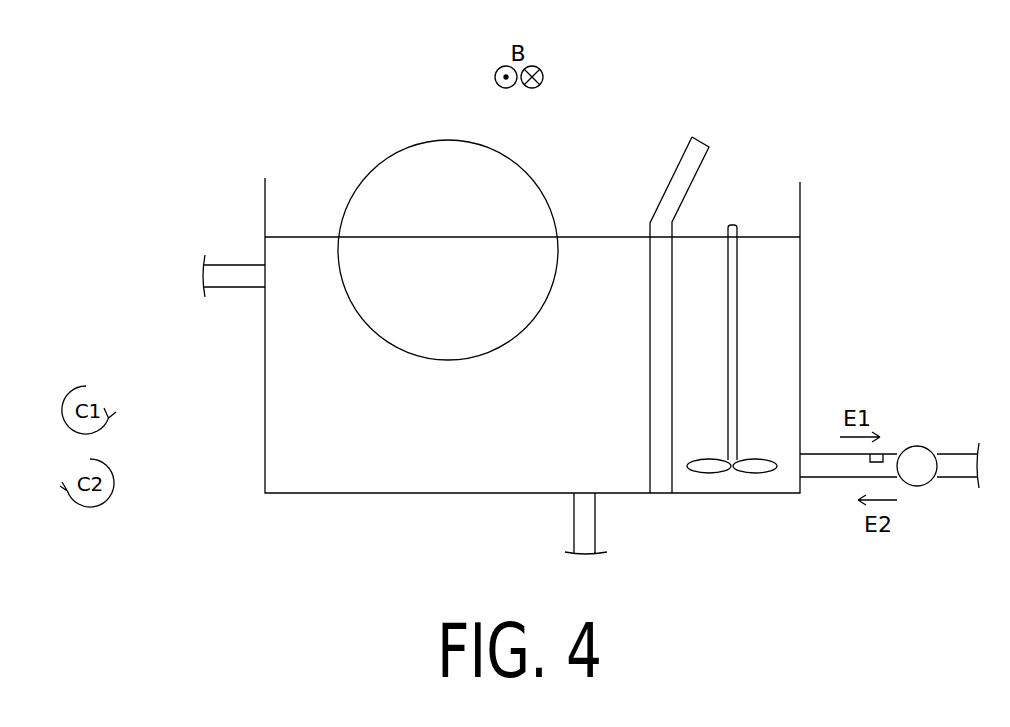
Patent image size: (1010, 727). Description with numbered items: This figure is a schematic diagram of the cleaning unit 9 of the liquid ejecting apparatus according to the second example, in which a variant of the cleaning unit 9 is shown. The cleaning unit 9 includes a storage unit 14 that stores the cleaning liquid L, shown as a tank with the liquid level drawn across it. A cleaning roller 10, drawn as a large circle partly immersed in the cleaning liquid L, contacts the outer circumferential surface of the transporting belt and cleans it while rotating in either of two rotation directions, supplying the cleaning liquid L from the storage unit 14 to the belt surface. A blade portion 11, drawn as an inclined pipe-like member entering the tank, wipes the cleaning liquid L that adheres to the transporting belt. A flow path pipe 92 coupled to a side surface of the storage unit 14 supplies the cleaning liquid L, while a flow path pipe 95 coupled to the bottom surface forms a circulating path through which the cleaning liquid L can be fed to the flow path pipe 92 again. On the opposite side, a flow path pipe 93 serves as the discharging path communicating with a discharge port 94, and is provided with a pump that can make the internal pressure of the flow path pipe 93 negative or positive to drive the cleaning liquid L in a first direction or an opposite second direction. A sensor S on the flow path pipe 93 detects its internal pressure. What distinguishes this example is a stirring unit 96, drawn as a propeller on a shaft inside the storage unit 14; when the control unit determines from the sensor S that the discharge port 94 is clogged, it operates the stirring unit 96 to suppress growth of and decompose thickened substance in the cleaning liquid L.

The cleaning unit 9 is at (840, 104).
The cleaning roller 10 is at (407, 148).
The blade portion 11 is at (702, 137).
The storage unit 14 is at (800, 203).
The flow path pipe 92 is at (230, 265).
The flow path pipe 93 is at (822, 477).
The discharge port 94 is at (800, 468).
The flow path pipe 95 is at (574, 522).
The stirring unit 96 is at (733, 223).
The sensor S is at (877, 454).
The cleaning liquid L is at (749, 272).